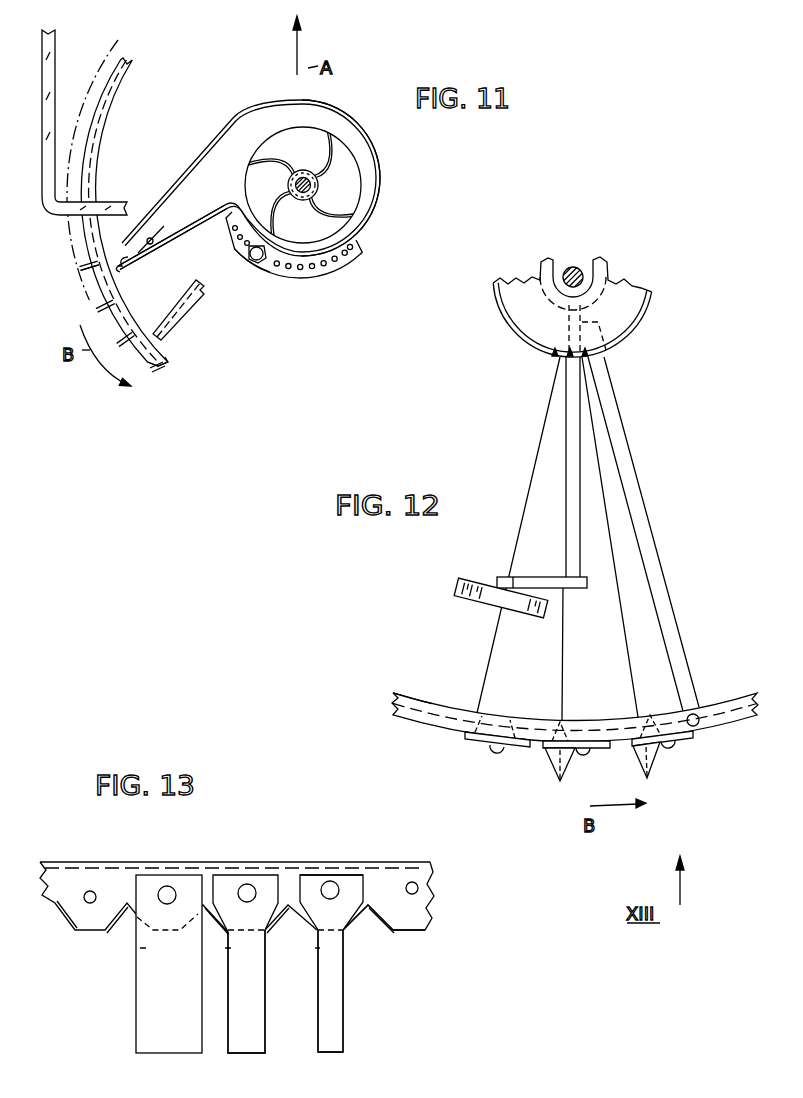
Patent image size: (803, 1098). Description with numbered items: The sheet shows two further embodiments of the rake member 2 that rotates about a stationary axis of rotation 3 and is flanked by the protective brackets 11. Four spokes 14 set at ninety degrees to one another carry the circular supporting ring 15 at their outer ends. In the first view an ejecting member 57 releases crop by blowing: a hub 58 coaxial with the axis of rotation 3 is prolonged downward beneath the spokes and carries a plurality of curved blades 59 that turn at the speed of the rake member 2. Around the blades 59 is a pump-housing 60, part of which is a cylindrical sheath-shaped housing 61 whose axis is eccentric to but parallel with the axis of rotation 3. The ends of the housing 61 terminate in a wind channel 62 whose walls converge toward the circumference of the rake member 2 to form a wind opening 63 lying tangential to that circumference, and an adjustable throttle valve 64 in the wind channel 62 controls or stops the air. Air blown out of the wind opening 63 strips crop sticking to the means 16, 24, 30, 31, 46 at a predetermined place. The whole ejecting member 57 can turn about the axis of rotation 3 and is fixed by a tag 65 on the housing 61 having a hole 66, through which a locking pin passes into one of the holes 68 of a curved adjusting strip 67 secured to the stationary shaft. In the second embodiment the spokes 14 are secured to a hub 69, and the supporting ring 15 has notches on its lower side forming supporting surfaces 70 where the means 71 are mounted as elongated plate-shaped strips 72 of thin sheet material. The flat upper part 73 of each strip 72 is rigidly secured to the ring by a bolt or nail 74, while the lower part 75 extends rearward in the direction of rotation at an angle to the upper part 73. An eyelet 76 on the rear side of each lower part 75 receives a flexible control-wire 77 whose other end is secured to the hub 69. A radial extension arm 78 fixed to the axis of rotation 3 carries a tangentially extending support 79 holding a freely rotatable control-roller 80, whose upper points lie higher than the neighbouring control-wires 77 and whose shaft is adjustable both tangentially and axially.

In FIG. 11, the rake member 2 is at (80, 283).
In FIG. 12, the rake member 2 is at (368, 698).
In FIG. 11, the axis of rotation 3 is at (313, 192).
In FIG. 12, the axis of rotation 3 is at (581, 264).
In FIG. 11, the brackets 11 is at (50, 57).
In FIG. 11, the spokes 14 is at (182, 322).
In FIG. 12, the spokes 14 is at (642, 510).
In FIG. 11, the supporting ring 15 is at (121, 90).
In FIG. 12, the supporting ring 15 is at (431, 702).
In FIG. 13, the supporting ring 15 is at (432, 880).
In FIG. 11, the means 16 is at (249, 379).
In FIG. 11, the means 24 is at (158, 364).
In FIG. 11, the rail end fitting 30 is at (158, 364).
In FIG. 11, the rail end fitting 31 is at (158, 364).
In FIG. 11, the means 46 is at (166, 374).
In FIG. 11, the ejecting member 57 is at (235, 104).
In FIG. 11, the hub 58 is at (306, 171).
In FIG. 11, the curved blades 59 is at (300, 162).
In FIG. 11, the pump-housing 60 is at (372, 143).
In FIG. 11, the housing 61 is at (376, 199).
In FIG. 11, the wind channel 62 is at (171, 252).
In FIG. 11, the wind opening 63 is at (126, 263).
In FIG. 11, the throttle valve 64 is at (164, 226).
In FIG. 11, the tag 65 is at (250, 260).
In FIG. 11, the hole 66 is at (262, 272).
In FIG. 11, the adjusting strip 67 is at (329, 276).
In FIG. 11, the holes 68 is at (351, 250).
In FIG. 12, the hub 69 is at (628, 327).
In FIG. 13, the supporting surfaces 70 is at (422, 924).
In FIG. 12, the means 71 is at (480, 787).
In FIG. 13, the means 71 is at (392, 1008).
In FIG. 13, the plate-shaped strip 72 is at (136, 1038).
In FIG. 12, the upper part 73 is at (547, 760).
In FIG. 13, the upper part 73 is at (225, 874).
In FIG. 12, the bolt or nail 74 is at (672, 748).
In FIG. 13, the bolt or nail 74 is at (252, 888).
In FIG. 12, the lower part 75 is at (657, 763).
In FIG. 13, the lower part 75 is at (264, 991).
In FIG. 12, the eyelet 76 is at (470, 738).
In FIG. 13, the eyelet 76 is at (316, 946).
In FIG. 12, the control-wire 77 is at (628, 650).
In FIG. 12, the extension arm 78 is at (577, 560).
In FIG. 12, the support 79 is at (553, 577).
In FIG. 12, the control-roller 80 is at (457, 586).